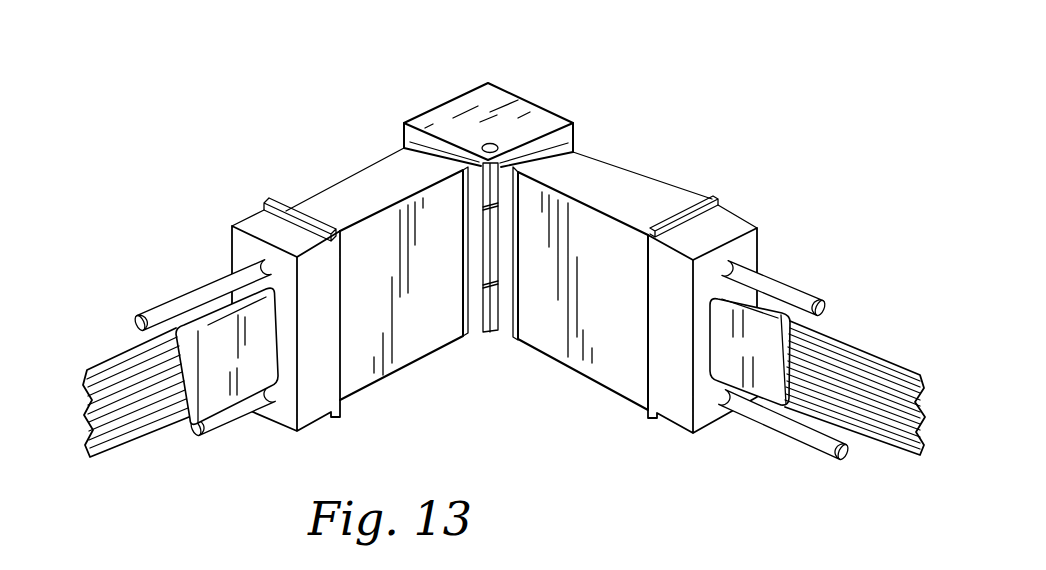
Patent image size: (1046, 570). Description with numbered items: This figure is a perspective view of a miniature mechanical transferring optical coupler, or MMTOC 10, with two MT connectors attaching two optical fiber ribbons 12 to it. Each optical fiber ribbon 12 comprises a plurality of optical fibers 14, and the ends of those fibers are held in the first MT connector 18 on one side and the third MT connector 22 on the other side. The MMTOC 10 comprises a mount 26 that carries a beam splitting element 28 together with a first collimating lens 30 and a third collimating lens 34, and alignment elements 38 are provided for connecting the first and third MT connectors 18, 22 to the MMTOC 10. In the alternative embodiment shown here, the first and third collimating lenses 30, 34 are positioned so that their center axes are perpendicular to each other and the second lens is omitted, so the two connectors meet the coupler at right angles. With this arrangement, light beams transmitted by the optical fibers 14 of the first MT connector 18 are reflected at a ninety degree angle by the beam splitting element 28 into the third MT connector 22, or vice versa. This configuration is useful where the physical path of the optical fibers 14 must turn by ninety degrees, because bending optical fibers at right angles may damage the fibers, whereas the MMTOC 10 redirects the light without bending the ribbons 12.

The miniature mechanical transferring optical coupler 10 is at (603, 73).
The optical fiber ribbon 12 is at (82, 340).
The optical fibers 14 is at (127, 438).
The first MT connector 18 is at (358, 187).
The third MT connector 22 is at (642, 193).
The mount 26 is at (491, 101).
The beam splitting element 28 is at (492, 252).
The first collimating lens 30 is at (443, 152).
The third collimating lens 34 is at (552, 147).
The alignment element 38 is at (170, 307).